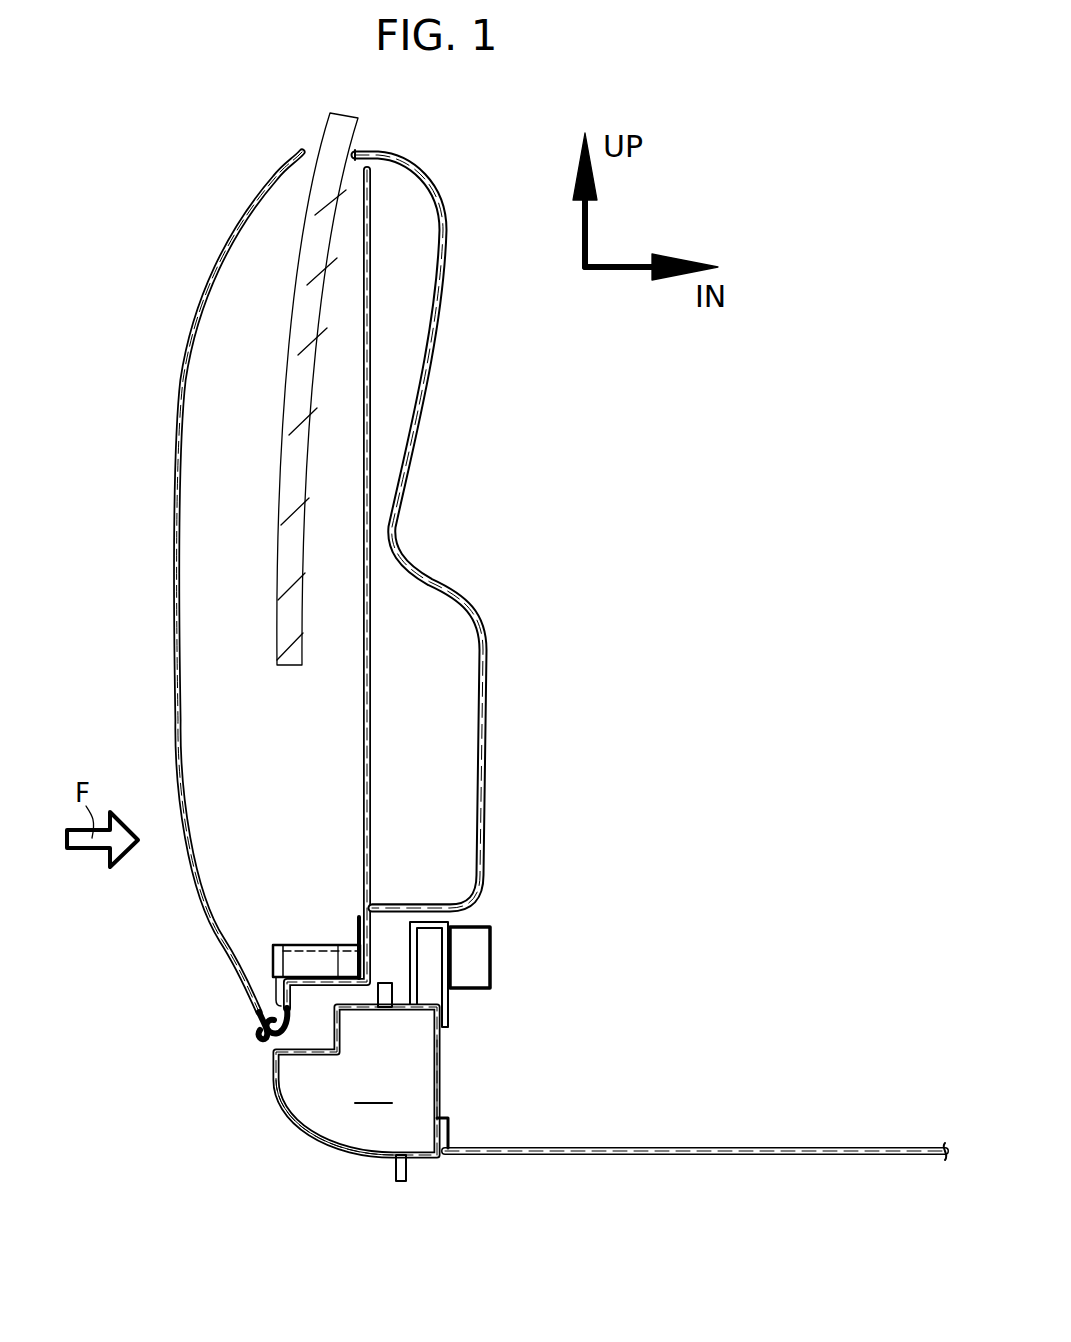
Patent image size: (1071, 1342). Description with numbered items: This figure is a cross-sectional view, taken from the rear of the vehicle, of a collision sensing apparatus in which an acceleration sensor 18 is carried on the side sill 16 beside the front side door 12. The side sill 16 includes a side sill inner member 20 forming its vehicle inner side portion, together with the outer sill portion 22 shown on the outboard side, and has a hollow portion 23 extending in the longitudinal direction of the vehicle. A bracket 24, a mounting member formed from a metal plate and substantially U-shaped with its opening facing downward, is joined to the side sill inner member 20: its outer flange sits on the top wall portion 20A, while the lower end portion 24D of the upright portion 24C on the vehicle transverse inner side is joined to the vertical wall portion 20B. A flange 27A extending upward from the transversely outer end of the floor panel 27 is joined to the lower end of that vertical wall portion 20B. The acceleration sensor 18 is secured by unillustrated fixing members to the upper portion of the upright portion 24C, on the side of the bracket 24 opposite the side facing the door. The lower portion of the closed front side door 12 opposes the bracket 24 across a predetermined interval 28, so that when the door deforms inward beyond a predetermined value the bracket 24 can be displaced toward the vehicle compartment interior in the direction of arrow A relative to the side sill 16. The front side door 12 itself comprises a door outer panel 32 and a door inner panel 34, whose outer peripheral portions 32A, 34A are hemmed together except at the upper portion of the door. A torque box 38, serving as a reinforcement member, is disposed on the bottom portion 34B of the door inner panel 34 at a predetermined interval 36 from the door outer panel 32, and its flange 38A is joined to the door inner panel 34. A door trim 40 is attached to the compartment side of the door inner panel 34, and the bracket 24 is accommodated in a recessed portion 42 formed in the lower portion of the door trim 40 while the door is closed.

The front side door 12 is at (118, 568).
The side sill 16 is at (258, 1185).
The acceleration sensor 18 is at (491, 975).
The side sill inner member 20 is at (420, 1165).
The top wall portion 20A is at (432, 1010).
The vertical wall portion 20B is at (445, 1080).
The lower curved portion 22 is at (298, 1139).
The hollow portion 23 is at (374, 1086).
The bracket 24 is at (462, 918).
The upright portion 24C is at (450, 985).
The lower end portion 24D is at (450, 1025).
The floor panel 27 is at (728, 1143).
The flange 27A is at (456, 1134).
The predetermined interval 28 is at (386, 956).
The door outer panel 32 is at (176, 626).
The outer peripheral portion 32A is at (258, 1028).
The door inner panel 34 is at (356, 696).
The outer peripheral portion 34A is at (282, 1034).
The bottom portion 34B is at (322, 977).
The predetermined interval 36 is at (250, 970).
The torque box 38 is at (298, 938).
The flange 38A is at (338, 945).
The door trim 40 is at (492, 690).
The recessed portion 42 is at (430, 902).
The arrow A is at (476, 955).